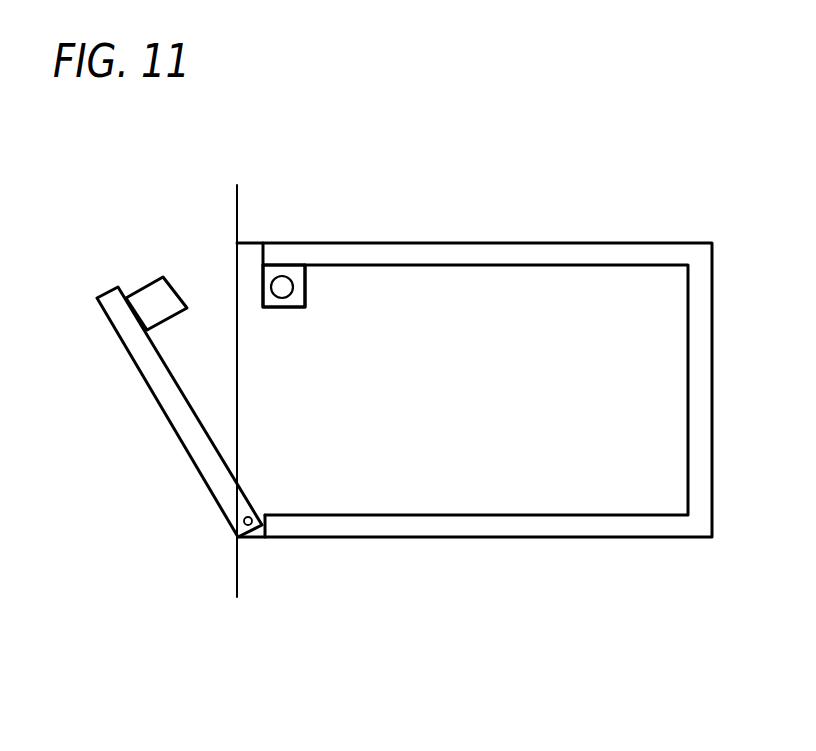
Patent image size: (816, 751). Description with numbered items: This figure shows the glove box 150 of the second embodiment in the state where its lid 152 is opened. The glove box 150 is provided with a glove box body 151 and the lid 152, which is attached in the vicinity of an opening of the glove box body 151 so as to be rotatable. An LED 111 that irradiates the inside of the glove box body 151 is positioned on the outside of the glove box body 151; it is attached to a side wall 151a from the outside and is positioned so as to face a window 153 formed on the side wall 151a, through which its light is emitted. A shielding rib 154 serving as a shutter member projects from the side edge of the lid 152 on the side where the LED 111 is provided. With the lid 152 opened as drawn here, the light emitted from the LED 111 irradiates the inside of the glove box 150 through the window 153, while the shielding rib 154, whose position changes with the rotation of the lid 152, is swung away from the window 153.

The glove box 150 is at (620, 197).
The glove box body 151 is at (473, 254).
The side wall 151a is at (386, 305).
The window 153 is at (263, 277).
The LED 111 is at (281, 274).
The lid 152 is at (198, 442).
The shielding rib 154 is at (145, 315).